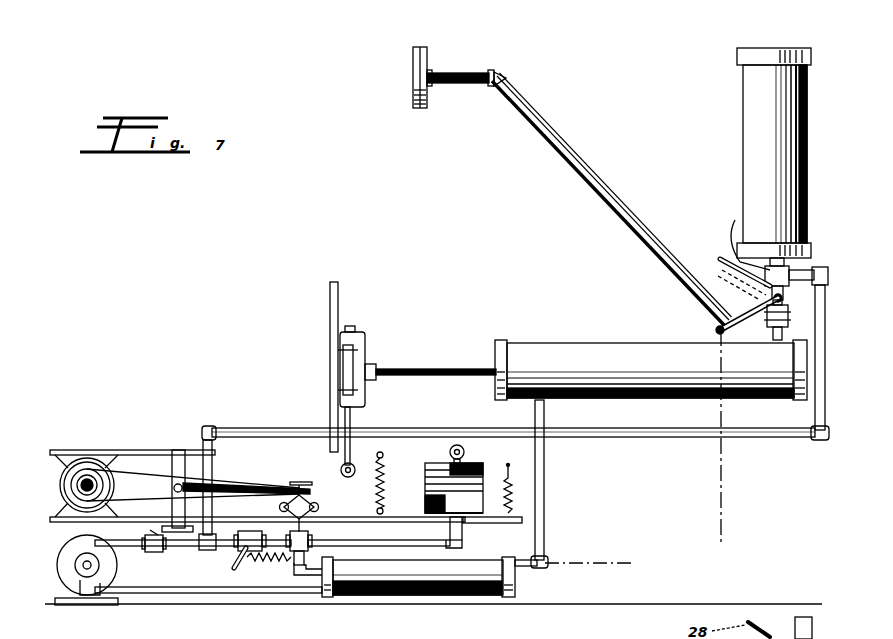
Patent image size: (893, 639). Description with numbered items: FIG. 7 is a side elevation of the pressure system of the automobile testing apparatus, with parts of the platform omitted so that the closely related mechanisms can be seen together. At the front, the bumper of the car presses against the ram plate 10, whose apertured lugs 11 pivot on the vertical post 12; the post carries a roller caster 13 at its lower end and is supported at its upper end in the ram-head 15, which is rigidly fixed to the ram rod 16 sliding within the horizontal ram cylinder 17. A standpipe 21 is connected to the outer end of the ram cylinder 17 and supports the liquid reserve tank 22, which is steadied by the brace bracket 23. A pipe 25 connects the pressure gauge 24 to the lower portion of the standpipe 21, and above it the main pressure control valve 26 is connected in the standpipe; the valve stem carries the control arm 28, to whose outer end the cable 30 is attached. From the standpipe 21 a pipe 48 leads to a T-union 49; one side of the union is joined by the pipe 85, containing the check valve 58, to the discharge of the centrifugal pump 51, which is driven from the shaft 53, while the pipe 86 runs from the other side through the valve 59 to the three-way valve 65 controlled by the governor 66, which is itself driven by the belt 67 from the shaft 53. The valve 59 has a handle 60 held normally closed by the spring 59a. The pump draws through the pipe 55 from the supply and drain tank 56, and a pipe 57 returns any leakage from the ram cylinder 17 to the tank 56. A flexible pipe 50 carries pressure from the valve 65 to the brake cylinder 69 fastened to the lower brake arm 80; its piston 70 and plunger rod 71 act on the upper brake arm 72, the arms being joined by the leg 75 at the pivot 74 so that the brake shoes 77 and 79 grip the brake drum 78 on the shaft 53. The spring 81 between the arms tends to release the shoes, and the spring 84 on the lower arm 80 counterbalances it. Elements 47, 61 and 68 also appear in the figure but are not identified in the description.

The ram plate 10 is at (338, 300).
The apertured lugs 11 is at (342, 390).
The vertical leg or post 12 is at (352, 418).
The roller caster 13 is at (341, 471).
The ram-head 15 is at (366, 340).
The ram rod 16 is at (430, 378).
The ram cylinder 17 is at (625, 342).
The standpipe 21 is at (772, 332).
The liquid reserve tank 22 is at (765, 100).
The brace bracket 23 is at (192, 434).
The pressure gauge 24 is at (414, 68).
The pipe 25 is at (588, 168).
The main pressure control valve 26 is at (772, 300).
The valve control lever 28 is at (730, 318).
The cable 30 is at (722, 520).
The link 47 is at (740, 240).
The pipe 48 is at (785, 432).
The T-union 49 is at (207, 548).
The flexible pipe 50 is at (390, 540).
The centrifugal pump 51 is at (68, 545).
The shaft 53 is at (193, 485).
The pipe 55 is at (190, 590).
The fluid supply and drain tank 56 is at (398, 598).
The pipe 57 is at (545, 500).
The check valve 58 is at (153, 553).
The valve 59 is at (263, 528).
The spring 59a is at (268, 612).
The handle 60 is at (238, 564).
The pipe 61 is at (600, 565).
The three-way valve 65 is at (305, 536).
The governor 66 is at (319, 507).
The belt 67 is at (250, 485).
The elbow pipe 68 is at (316, 577).
The brake cylinder 69 is at (485, 520).
The piston 70 is at (480, 468).
The plunger rod 71 is at (470, 446).
The upper brake arm 72 is at (305, 432).
The pivot 74 is at (212, 472).
The leg 75 is at (173, 509).
The brake shoe 77 is at (118, 450).
The brake drum 78 is at (62, 478).
The brake shoe 79 is at (62, 488).
The lower brake arm 80 is at (132, 512).
The spring 81 is at (384, 484).
The spring 84 is at (512, 486).
The pipe 85 is at (178, 555).
The pipe 86 is at (278, 528).